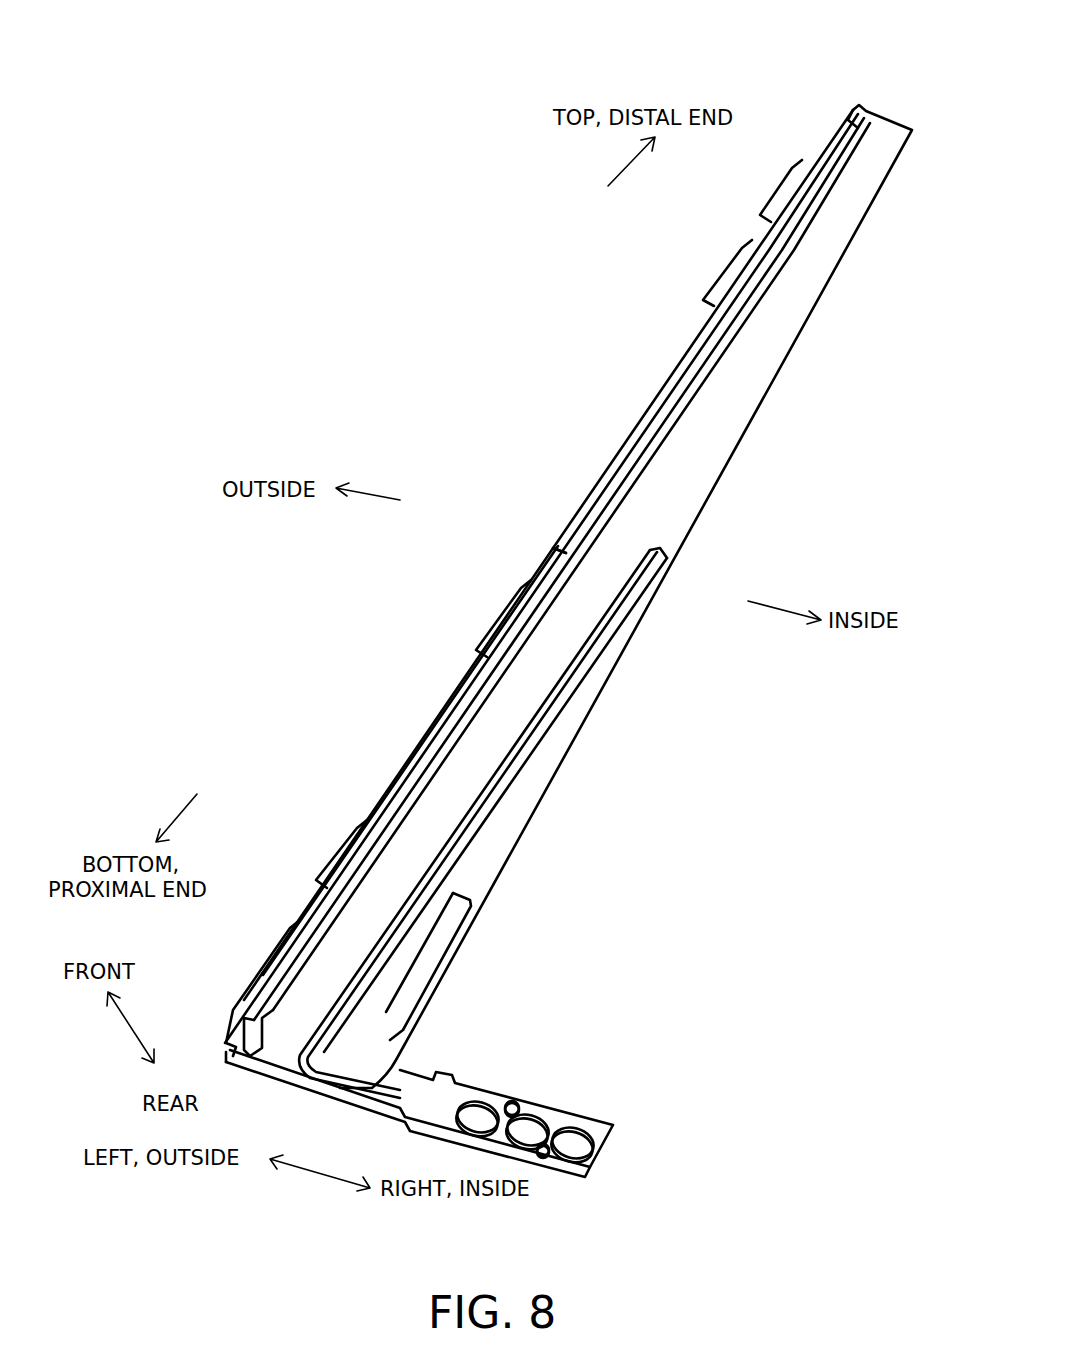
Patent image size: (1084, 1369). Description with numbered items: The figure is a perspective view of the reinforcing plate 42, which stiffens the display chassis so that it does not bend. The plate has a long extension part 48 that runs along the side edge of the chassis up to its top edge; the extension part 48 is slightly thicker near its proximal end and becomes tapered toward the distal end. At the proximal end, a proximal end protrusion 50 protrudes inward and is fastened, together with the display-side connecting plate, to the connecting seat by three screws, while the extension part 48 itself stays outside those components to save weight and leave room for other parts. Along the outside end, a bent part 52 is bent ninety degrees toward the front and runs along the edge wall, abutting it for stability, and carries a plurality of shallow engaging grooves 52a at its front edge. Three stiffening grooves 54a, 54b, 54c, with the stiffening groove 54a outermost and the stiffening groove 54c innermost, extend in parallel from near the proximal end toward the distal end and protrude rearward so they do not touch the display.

The reinforcing plate 42 is at (902, 62).
The extension part 48 is at (740, 379).
The proximal end protrusion 50 is at (458, 1097).
The bent part 52 is at (572, 498).
The engaging grooves 52a is at (802, 184).
The stiffening groove 54a is at (577, 550).
The stiffening groove 54b is at (525, 746).
The stiffening groove 54c is at (425, 966).